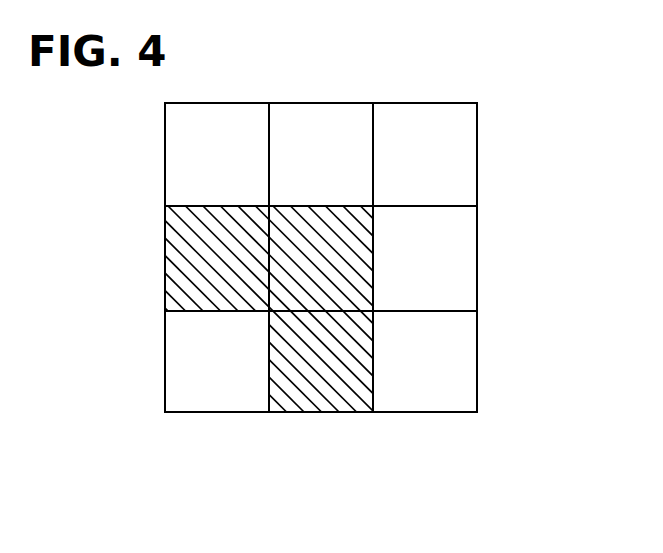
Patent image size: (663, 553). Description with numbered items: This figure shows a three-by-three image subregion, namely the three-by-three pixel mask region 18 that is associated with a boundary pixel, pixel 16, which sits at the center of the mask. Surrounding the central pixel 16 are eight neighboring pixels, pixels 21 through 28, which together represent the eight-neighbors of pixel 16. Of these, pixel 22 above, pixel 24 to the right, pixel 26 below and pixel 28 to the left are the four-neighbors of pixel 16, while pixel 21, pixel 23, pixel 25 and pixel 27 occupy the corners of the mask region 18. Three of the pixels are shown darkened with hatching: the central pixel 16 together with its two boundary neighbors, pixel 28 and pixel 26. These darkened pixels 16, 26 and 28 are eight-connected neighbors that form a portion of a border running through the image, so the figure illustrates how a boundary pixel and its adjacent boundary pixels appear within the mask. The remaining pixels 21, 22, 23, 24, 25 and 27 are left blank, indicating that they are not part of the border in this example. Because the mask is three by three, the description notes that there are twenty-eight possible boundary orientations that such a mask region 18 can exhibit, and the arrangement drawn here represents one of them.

The three-by-three pixel mask region 18 is at (512, 131).
The pixel 21 is at (213, 103).
The pixel 22 is at (318, 103).
The pixel 23 is at (417, 103).
The pixel 24 is at (477, 240).
The pixel 25 is at (433, 412).
The pixel 26 is at (325, 412).
The pixel 27 is at (210, 412).
The pixel 28 is at (165, 255).
The pixel 16 is at (355, 275).